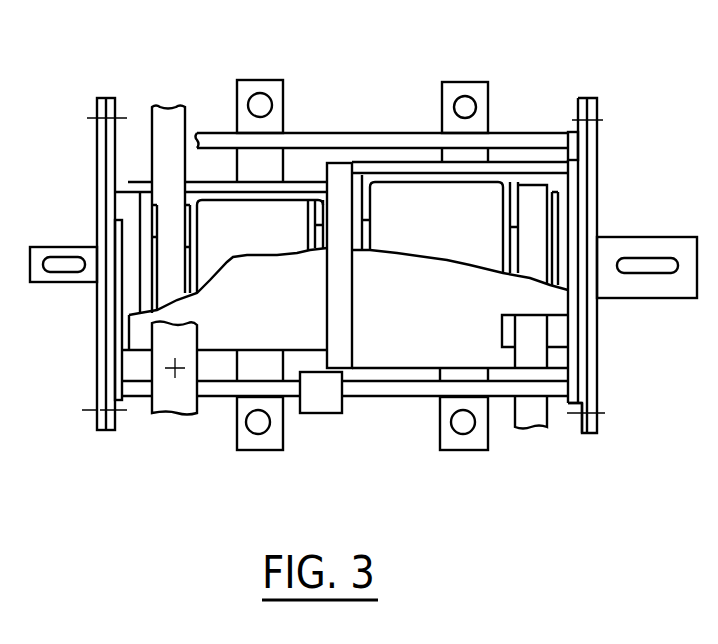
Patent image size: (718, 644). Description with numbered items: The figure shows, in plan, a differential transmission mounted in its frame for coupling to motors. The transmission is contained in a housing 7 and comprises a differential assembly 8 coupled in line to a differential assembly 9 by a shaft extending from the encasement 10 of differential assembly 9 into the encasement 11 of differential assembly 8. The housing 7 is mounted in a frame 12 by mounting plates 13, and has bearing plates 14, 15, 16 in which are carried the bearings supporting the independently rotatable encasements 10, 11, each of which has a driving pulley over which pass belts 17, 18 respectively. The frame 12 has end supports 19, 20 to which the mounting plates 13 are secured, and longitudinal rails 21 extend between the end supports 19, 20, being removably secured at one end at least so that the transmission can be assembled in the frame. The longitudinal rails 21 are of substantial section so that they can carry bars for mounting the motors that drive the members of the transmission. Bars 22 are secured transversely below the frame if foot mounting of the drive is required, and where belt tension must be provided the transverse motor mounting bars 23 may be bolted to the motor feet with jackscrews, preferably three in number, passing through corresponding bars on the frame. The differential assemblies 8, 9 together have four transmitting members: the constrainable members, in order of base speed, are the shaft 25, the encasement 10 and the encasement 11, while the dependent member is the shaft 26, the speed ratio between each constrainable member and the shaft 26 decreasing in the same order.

The housing 7 is at (380, 328).
The differential assembly 8 is at (495, 222).
The differential assembly 9 is at (77, 247).
The encasement 10 is at (250, 220).
The encasement 11 is at (400, 187).
The frame 12 is at (588, 431).
The mounting plates 13 is at (586, 428).
The bearing plate 14 is at (571, 183).
The bearing plate 15 is at (337, 177).
The bearing plate 16 is at (118, 192).
The belt 17 is at (168, 117).
The belt 18 is at (533, 417).
The end support 19 is at (600, 345).
The end support 20 is at (100, 418).
The longitudinal rails 21 is at (425, 397).
The bars 22 is at (258, 444).
The transverse motor mounting bars 23 is at (175, 403).
The shaft 25 is at (62, 284).
The shaft 26 is at (643, 292).